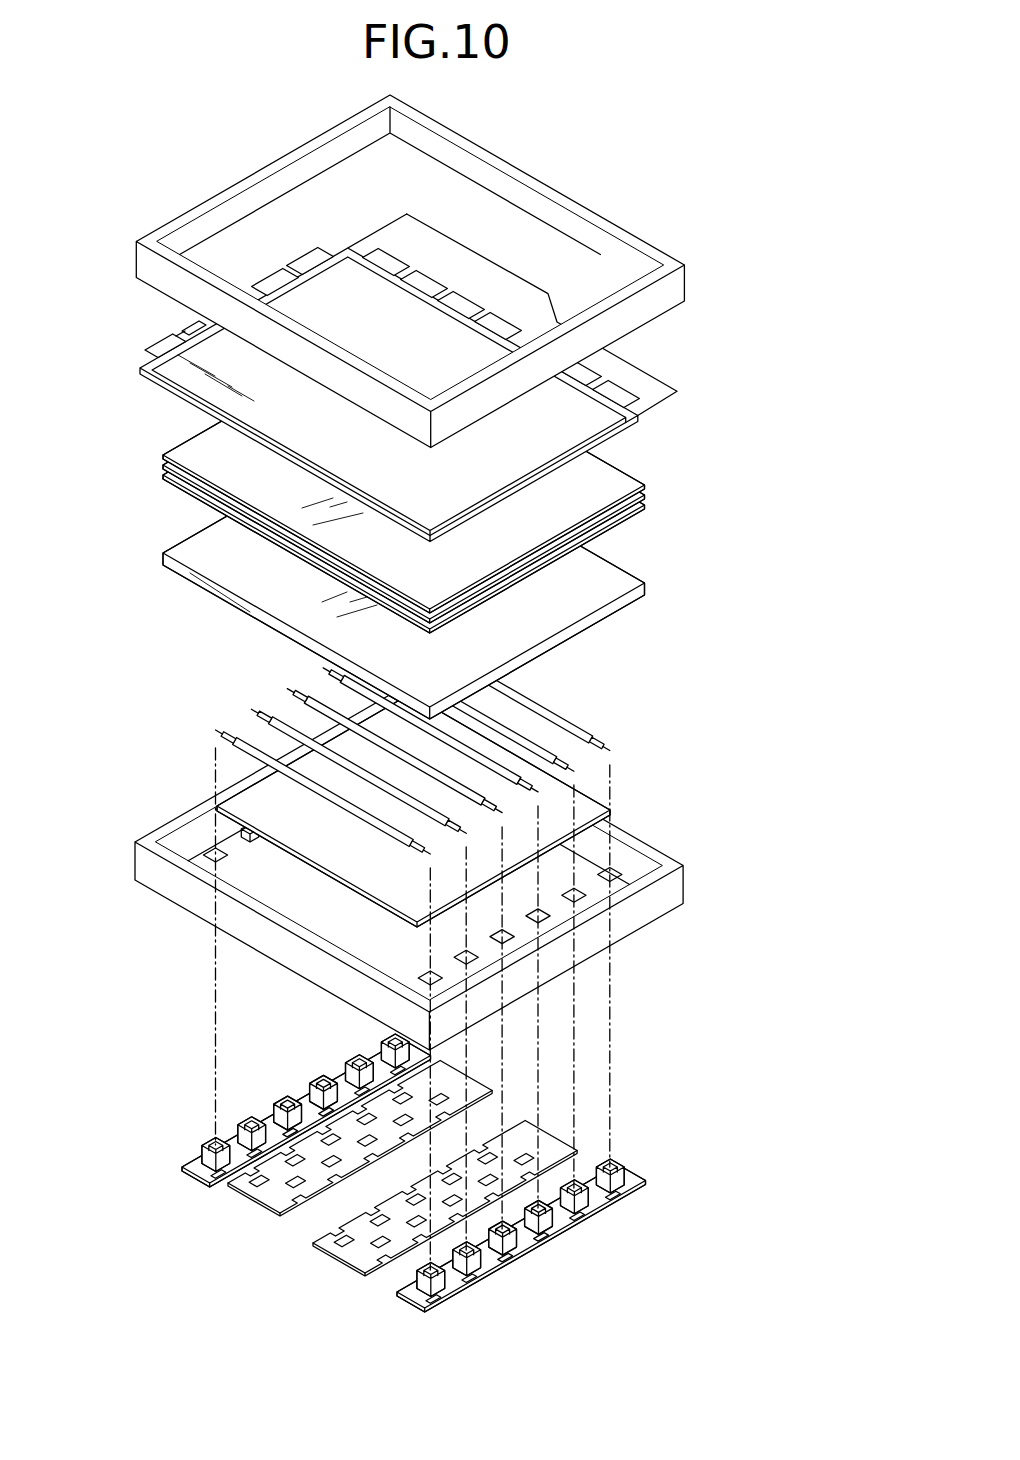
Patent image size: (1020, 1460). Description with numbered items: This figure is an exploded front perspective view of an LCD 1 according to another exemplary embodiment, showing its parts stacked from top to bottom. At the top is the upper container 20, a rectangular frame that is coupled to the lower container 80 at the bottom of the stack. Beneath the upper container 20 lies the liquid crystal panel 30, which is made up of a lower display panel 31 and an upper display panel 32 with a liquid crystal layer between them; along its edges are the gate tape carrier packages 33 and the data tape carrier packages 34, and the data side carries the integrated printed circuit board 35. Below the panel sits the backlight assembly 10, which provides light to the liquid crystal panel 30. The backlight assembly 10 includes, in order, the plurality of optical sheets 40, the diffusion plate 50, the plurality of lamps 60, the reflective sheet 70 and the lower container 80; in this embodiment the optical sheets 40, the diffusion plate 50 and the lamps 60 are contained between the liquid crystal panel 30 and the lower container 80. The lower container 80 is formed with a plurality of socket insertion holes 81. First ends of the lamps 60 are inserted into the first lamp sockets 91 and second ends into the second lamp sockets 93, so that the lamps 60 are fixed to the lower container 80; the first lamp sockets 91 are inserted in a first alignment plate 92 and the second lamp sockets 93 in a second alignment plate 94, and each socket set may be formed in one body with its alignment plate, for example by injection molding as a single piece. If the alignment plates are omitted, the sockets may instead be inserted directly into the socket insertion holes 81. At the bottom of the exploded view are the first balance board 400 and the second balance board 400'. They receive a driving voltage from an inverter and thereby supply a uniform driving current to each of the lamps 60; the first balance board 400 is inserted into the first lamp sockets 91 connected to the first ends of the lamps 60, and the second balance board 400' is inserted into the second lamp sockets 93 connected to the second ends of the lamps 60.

The LCD 1 is at (439, 722).
The backlight assembly 10 is at (461, 690).
The upper container 20 is at (683, 289).
The liquid crystal panel 30 is at (426, 378).
The lower display panel 31 is at (652, 420).
The upper display panel 32 is at (645, 412).
The gate tape carrier packages 33 is at (148, 348).
The data tape carrier packages 34 is at (622, 392).
The integrated printed circuit board 35 is at (608, 362).
The optical sheets 40 is at (424, 482).
The diffusion plate 50 is at (645, 580).
The lamps 60 is at (618, 745).
The reflective sheet 70 is at (590, 808).
The lower container 80 is at (676, 862).
The socket insertion holes 81 is at (614, 880).
The first lamp sockets 91 is at (207, 1152).
The first alignment plate 92 is at (202, 1172).
The second lamp sockets 93 is at (626, 1178).
The second alignment plate 94 is at (582, 1208).
The first balance board 400 is at (326, 1159).
The second balance board 400' is at (476, 1236).